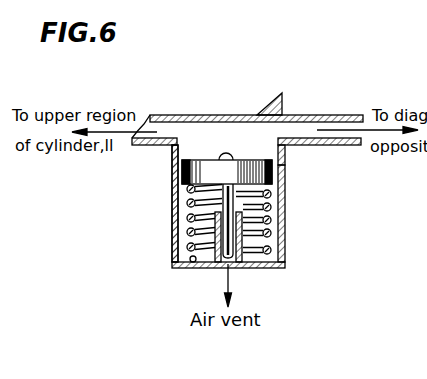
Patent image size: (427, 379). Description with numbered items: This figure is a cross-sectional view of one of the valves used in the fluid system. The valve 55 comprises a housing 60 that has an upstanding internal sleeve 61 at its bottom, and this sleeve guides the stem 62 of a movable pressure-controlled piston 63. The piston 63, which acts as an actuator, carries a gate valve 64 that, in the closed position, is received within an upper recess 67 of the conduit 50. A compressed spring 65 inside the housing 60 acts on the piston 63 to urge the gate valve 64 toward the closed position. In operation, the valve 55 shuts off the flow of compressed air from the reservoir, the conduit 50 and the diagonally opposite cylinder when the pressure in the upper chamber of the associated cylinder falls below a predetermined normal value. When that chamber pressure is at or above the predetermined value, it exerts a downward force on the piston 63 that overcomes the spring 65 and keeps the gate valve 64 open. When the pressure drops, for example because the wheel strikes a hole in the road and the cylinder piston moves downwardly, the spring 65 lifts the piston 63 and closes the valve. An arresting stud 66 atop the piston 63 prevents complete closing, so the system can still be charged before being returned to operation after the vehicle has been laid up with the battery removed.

The conduit 50 is at (177, 108).
The upper recess 67 is at (267, 115).
The valve 55 is at (290, 212).
The gate valve 64 is at (283, 147).
The housing 60 is at (172, 210).
The upstanding internal sleeve 61 is at (210, 257).
The pressure-controlled piston 63 is at (183, 178).
The arresting stud 66 is at (226, 153).
The compressed spring 65 is at (190, 232).
The stem 62 is at (227, 262).